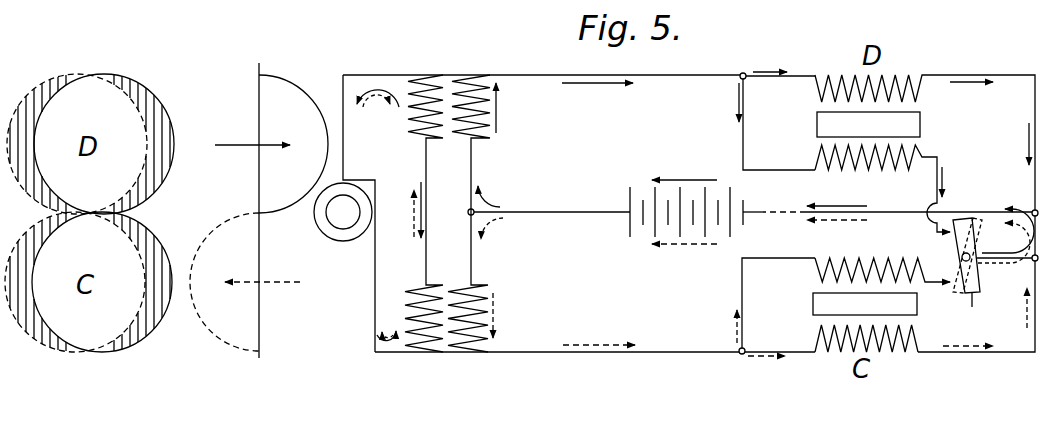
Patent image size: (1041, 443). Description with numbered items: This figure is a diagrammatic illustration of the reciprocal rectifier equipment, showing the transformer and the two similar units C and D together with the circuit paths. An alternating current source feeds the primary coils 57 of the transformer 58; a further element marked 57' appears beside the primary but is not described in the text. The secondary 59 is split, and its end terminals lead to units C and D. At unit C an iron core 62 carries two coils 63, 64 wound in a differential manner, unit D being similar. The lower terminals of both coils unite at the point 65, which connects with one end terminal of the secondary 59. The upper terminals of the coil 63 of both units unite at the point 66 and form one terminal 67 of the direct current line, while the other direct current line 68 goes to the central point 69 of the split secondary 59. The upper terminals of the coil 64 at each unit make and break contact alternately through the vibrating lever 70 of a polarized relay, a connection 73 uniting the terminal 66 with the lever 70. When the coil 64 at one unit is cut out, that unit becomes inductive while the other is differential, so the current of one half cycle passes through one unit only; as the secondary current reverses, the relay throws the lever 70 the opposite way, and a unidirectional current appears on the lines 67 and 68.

The primary coils 57 is at (419, 213).
The roll 57' is at (341, 212).
The transformer 58 is at (541, 214).
The secondary 59 is at (482, 141).
The iron core 62 is at (813, 302).
The coil 63 is at (917, 333).
The coil 64 is at (815, 264).
The junction point 65 is at (740, 354).
The junction point 66 is at (1030, 210).
The direct current line terminal 67 is at (798, 213).
The direct current line 68 is at (767, 213).
The central point 69 is at (470, 215).
The vibrating lever 70 is at (976, 270).
The connection 73 is at (1000, 262).